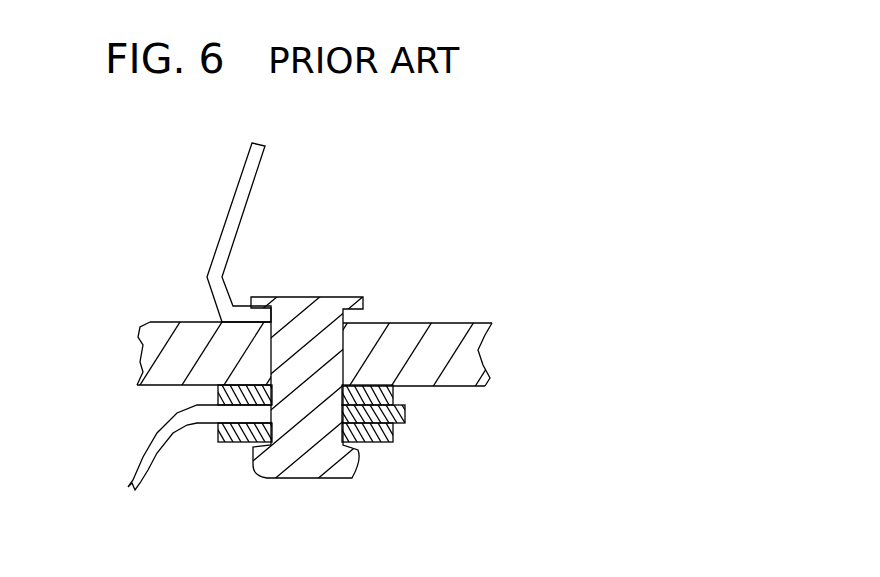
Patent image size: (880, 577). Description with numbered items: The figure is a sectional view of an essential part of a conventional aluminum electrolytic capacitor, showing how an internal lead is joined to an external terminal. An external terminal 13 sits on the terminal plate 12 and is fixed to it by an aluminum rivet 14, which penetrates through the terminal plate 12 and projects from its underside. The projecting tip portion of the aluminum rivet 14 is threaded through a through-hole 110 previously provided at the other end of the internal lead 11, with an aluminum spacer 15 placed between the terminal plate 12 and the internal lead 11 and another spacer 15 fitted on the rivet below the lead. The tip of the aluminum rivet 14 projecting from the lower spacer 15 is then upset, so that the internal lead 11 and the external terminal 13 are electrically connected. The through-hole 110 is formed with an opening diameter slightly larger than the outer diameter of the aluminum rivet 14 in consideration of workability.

The internal lead 11 is at (140, 448).
The terminal plate 12 is at (197, 327).
The external terminal 13 is at (237, 193).
The aluminum rivet 14 is at (296, 470).
The aluminum spacer 15 is at (218, 393).
The through-hole 110 is at (362, 447).